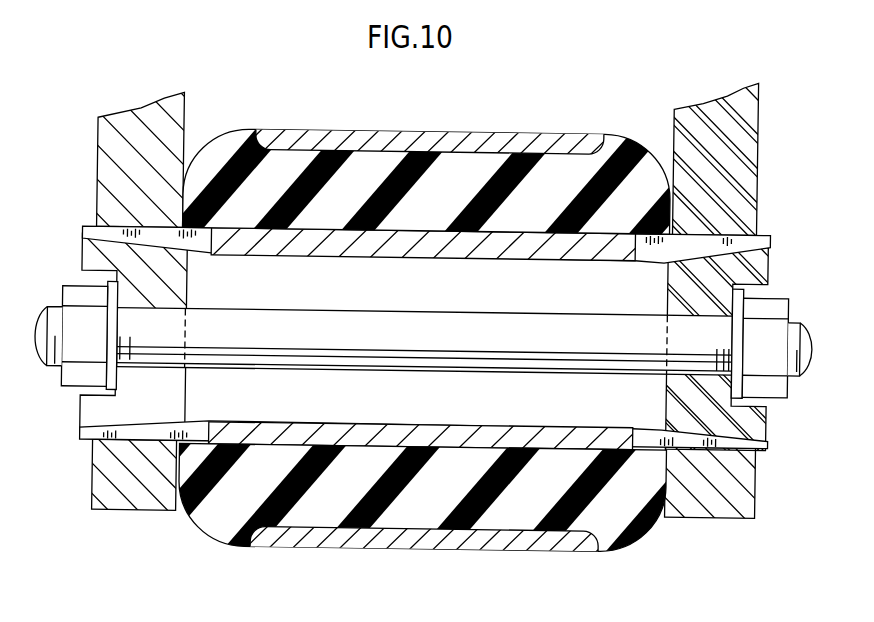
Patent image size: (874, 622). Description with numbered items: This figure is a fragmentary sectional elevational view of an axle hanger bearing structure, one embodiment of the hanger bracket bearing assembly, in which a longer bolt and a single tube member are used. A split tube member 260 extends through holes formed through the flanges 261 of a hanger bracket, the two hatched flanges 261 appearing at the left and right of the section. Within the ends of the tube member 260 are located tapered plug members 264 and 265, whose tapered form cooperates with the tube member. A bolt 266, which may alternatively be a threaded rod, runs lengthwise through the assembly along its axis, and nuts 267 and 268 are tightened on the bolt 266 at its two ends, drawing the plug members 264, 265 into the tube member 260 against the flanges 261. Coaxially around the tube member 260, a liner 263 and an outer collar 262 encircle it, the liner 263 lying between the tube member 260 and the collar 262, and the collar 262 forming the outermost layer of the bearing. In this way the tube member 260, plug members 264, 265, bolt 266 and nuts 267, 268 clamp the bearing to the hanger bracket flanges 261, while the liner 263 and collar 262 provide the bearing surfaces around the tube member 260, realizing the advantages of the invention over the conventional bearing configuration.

The split tube member 260 is at (423, 246).
The flanges of a hanger bracket 261 is at (183, 114).
The outer collar 262 is at (477, 145).
The liner 263 is at (353, 165).
The tapered plug member 264 is at (752, 265).
The tapered plug member 265 is at (84, 424).
The bolt 266 is at (303, 327).
The nut 267 is at (767, 330).
The nut 268 is at (78, 325).